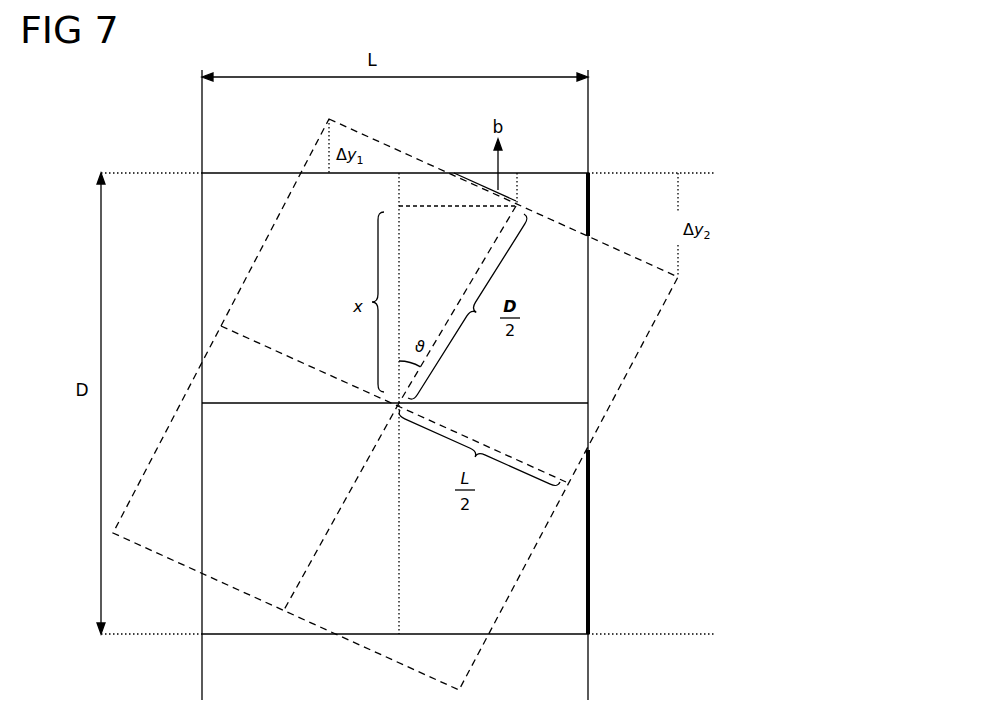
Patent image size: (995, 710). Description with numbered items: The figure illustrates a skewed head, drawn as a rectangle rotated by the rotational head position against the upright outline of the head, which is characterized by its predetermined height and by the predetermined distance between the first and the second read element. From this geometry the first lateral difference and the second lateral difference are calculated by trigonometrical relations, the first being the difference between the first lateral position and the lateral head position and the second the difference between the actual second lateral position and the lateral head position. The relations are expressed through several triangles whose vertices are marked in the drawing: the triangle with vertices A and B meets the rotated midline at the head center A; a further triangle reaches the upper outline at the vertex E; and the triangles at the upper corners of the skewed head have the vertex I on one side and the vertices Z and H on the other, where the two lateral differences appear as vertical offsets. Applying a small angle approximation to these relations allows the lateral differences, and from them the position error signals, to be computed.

The triangle vertex I is at (328, 191).
The triangle vertex E is at (520, 177).
The triangle vertex Z is at (681, 212).
The triangle vertex H is at (698, 278).
The triangle vertex B is at (381, 204).
The triangle vertex A is at (376, 415).